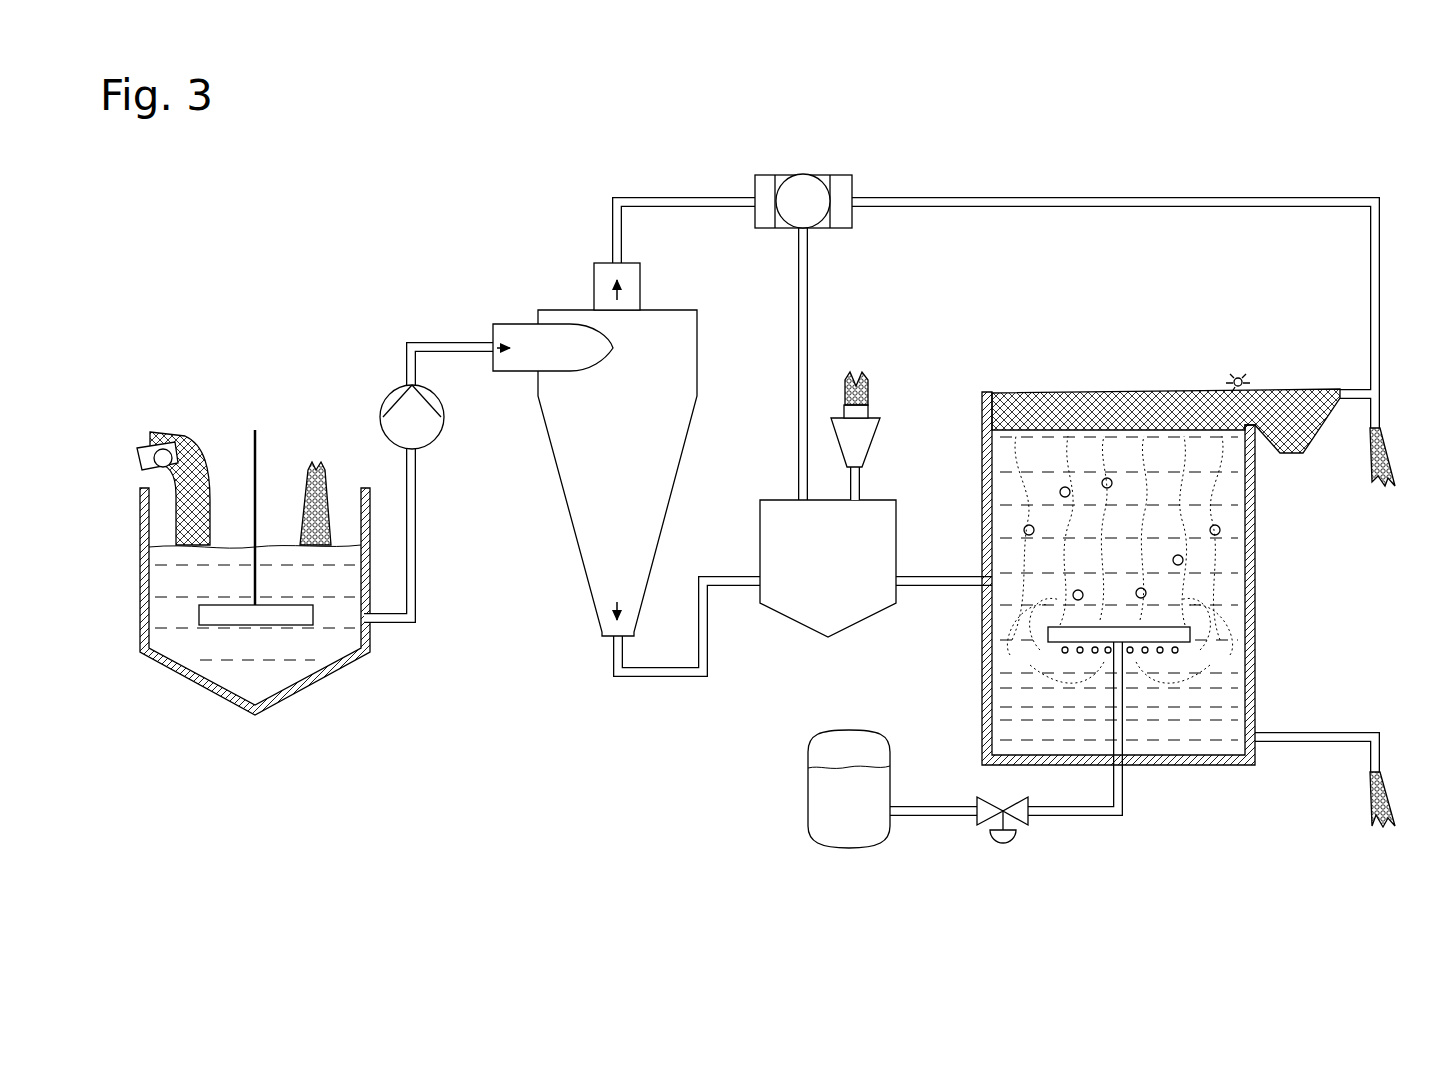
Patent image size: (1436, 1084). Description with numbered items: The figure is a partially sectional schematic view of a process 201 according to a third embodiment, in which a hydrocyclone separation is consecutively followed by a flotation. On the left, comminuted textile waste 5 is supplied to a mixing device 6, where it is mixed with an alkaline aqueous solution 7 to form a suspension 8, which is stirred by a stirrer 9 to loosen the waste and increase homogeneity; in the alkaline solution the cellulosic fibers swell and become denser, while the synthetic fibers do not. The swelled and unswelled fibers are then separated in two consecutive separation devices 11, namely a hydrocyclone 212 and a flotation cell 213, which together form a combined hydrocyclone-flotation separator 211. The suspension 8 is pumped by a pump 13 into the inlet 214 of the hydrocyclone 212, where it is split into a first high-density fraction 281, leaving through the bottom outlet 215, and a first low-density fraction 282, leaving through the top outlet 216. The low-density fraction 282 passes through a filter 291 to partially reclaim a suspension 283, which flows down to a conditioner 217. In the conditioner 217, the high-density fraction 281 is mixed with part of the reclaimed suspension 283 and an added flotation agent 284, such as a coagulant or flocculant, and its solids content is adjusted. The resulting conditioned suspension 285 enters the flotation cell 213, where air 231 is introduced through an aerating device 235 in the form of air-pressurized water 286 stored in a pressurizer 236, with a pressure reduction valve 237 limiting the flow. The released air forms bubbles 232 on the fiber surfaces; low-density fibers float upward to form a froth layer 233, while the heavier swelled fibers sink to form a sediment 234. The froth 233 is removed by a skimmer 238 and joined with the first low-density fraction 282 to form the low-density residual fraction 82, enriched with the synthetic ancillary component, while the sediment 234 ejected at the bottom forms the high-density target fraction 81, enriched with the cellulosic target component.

The comminuted textile waste 5 is at (152, 445).
The mixing device 6 is at (128, 652).
The alkaline aqueous solution 7 is at (318, 462).
The suspension 8 is at (437, 343).
The stirrer 9 is at (252, 458).
The separation devices 11 is at (527, 507).
The pump 13 is at (428, 422).
The high-density target fraction 81 is at (1385, 827).
The low-density residual fraction 82 is at (1386, 487).
The process 201 is at (1327, 101).
The combined hydrocyclone-flotation separator 211 is at (613, 544).
The hydrocyclone 212 is at (672, 450).
The flotation cell 213 is at (1121, 521).
The inlet 214 is at (503, 332).
The bottom outlet 215 is at (606, 613).
The top outlet 216 is at (641, 292).
The conditioner 217 is at (800, 607).
The air 231 is at (982, 622).
The bubbles 232 is at (1185, 560).
The froth layer 233 is at (1108, 410).
The sediment 234 is at (1182, 742).
The aerating device 235 is at (1076, 642).
The pressurizer 236 is at (852, 850).
The pressure reduction valve 237 is at (1003, 840).
The skimmer 238 is at (1244, 376).
The first high-density fraction 281 is at (660, 684).
The first low-density fraction 282 is at (683, 198).
The reclaimed suspension 283 is at (810, 290).
The flotation agent 284 is at (876, 375).
The conditioned suspension 285 is at (942, 578).
The air-pressurized water 286 is at (837, 818).
The filter 291 is at (803, 185).